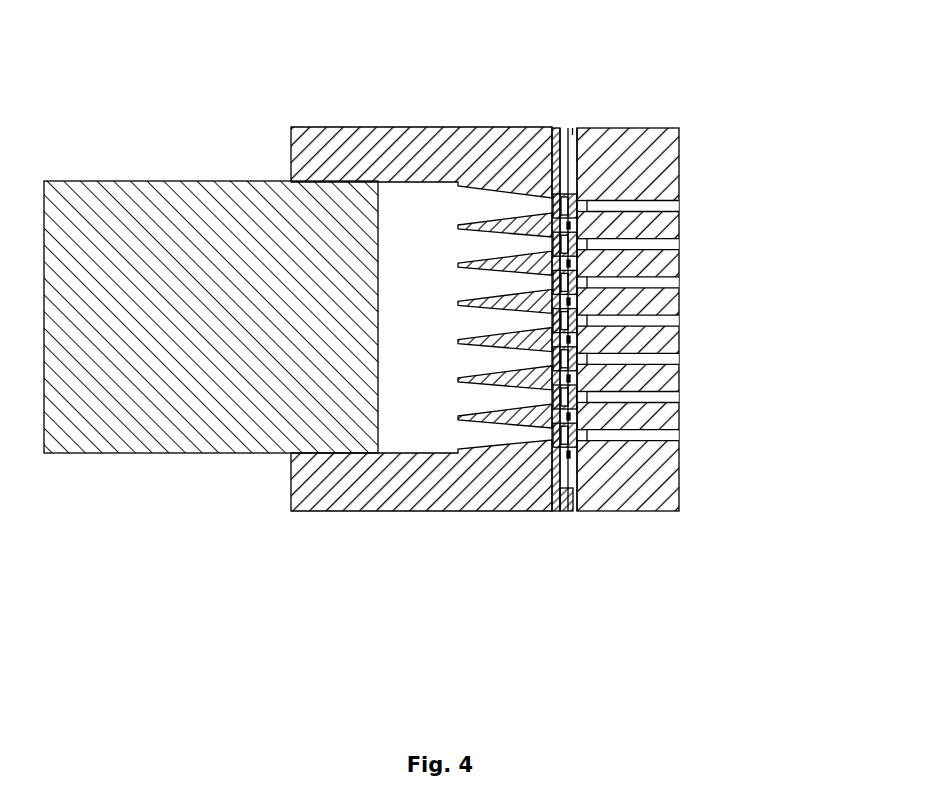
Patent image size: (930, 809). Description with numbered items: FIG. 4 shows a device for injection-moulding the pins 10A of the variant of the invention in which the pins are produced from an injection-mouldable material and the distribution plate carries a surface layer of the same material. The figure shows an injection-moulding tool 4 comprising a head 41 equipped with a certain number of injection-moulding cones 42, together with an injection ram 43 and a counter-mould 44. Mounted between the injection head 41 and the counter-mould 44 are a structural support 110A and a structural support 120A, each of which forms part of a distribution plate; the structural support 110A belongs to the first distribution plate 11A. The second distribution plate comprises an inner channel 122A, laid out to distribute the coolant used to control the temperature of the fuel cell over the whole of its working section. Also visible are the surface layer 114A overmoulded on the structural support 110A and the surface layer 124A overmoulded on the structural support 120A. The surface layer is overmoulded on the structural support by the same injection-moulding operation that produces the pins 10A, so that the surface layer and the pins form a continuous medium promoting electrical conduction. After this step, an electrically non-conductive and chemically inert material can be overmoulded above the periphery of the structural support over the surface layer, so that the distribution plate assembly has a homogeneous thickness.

The injection-moulding tool 4 is at (96, 508).
The head 41 is at (402, 153).
The injection-moulding cones 42 is at (484, 438).
The injection ram 43 is at (207, 202).
The counter-mould 44 is at (651, 490).
The pins 10A is at (603, 210).
The first distribution plate 11A is at (615, 598).
The structural support 110A is at (560, 128).
The structural support 120A is at (575, 128).
The inner channel 122A is at (573, 264).
The surface layer 124A is at (581, 420).
The surface layer 114A is at (551, 443).